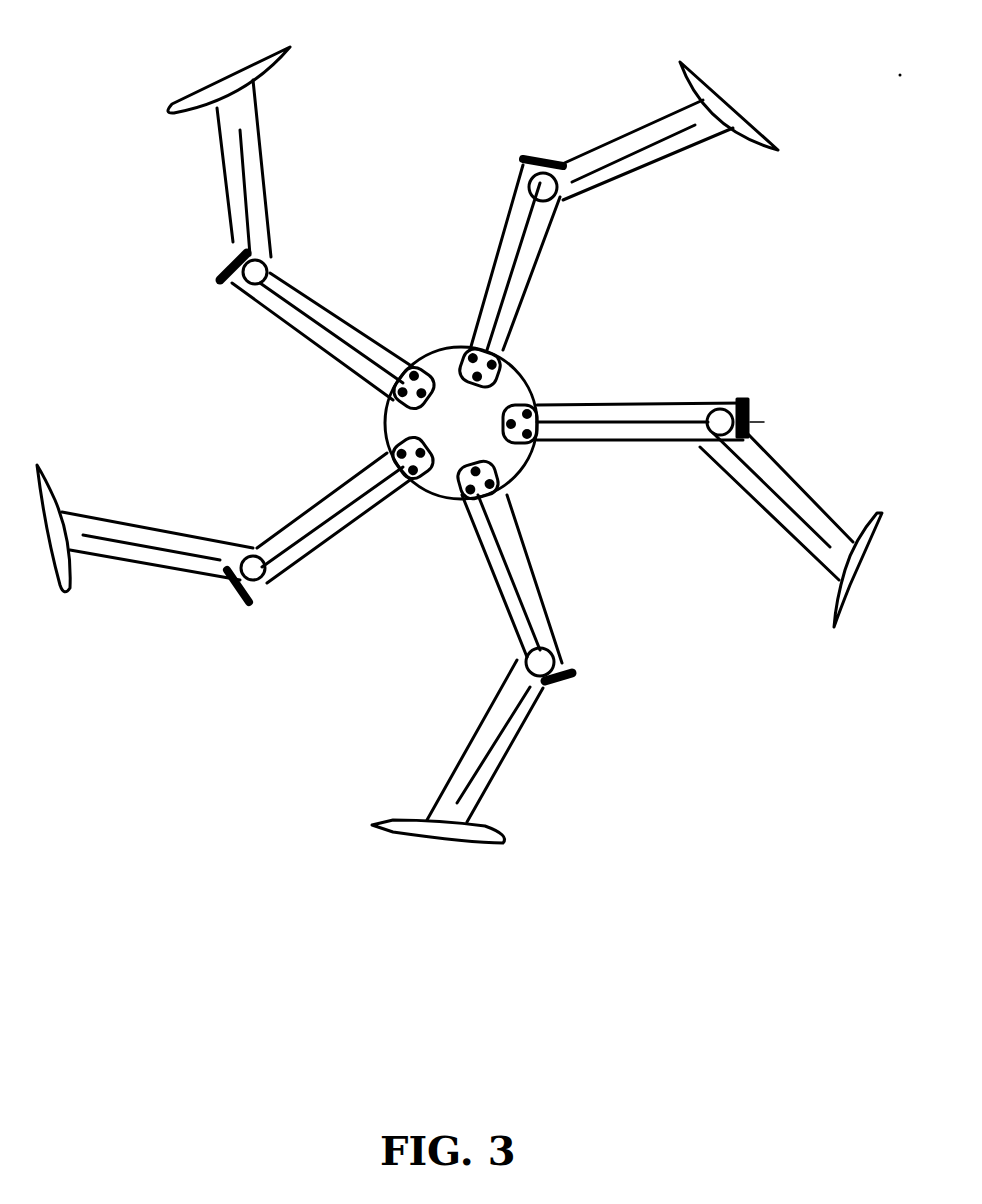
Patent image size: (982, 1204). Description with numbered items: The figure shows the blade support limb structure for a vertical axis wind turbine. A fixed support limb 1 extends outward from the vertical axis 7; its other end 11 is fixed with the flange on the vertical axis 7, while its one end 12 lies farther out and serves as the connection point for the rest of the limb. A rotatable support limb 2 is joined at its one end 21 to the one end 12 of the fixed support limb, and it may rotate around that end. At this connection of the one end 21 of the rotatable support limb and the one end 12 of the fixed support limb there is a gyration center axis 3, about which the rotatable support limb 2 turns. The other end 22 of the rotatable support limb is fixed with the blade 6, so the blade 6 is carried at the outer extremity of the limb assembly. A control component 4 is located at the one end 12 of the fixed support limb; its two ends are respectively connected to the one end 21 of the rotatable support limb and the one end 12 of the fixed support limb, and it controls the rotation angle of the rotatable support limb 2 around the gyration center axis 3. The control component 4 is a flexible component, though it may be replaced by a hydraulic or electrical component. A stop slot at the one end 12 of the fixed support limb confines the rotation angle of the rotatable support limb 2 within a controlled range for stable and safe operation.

The fixed support limb 1 is at (632, 403).
The other end of the fixed support limb 11 is at (540, 403).
The one end of the fixed support limb 12 is at (743, 402).
The rotatable support limb 2 is at (762, 510).
The one end of the rotatable support limb 21 is at (712, 443).
The other end of the rotatable support limb 22 is at (837, 593).
The gyration center axis 3 is at (727, 398).
The control component 4 is at (243, 603).
The blade 6 is at (470, 835).
The vertical axis 7 is at (446, 481).